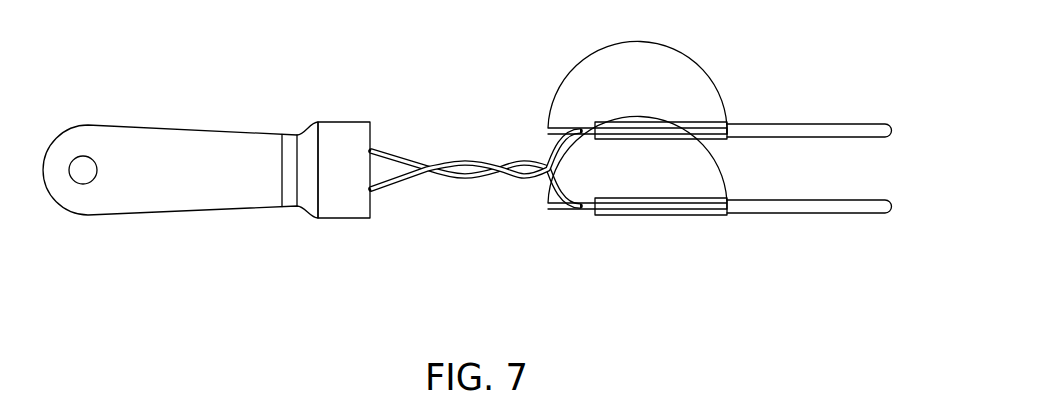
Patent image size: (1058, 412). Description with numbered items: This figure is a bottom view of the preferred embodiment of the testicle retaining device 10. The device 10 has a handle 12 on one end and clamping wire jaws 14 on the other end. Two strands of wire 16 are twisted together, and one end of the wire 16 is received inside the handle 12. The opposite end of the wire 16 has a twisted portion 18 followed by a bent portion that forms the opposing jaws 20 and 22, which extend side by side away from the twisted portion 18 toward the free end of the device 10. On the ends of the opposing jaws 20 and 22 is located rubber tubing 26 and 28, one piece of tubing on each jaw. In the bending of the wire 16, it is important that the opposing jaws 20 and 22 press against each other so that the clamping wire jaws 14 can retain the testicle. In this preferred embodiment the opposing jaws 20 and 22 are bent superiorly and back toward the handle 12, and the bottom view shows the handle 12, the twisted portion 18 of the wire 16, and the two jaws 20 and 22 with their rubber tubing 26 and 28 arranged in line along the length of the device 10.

The testicle retaining device 10 is at (481, 76).
The handle 12 is at (192, 207).
The clamping wire jaws 14 is at (895, 123).
The wire 16 is at (402, 186).
The twisted portion 18 is at (415, 152).
The opposing jaw 20 is at (828, 123).
The opposing jaw 22 is at (828, 213).
The rubber tubing 26 is at (726, 127).
The rubber tubing 28 is at (726, 212).